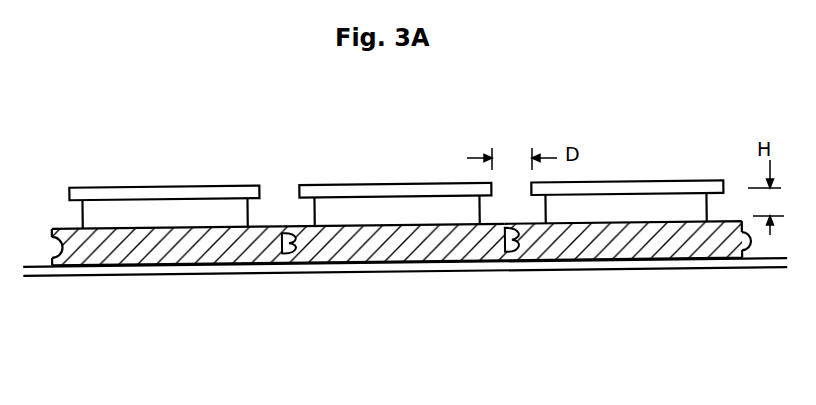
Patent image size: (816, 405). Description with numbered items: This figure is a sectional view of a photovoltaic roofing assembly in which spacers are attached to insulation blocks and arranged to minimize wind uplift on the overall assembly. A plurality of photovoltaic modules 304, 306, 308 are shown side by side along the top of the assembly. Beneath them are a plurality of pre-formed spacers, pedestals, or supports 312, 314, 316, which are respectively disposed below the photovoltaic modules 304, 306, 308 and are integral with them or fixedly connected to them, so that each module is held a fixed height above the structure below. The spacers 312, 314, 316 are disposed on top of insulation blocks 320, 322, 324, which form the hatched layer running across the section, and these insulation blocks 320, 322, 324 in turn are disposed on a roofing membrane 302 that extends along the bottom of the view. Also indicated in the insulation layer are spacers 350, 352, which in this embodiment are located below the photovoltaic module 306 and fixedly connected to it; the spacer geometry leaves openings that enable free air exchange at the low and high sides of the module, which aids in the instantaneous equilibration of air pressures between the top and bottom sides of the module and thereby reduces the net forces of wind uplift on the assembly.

The roofing membrane 302 is at (377, 268).
The photovoltaic module 304 is at (182, 187).
The photovoltaic module 306 is at (390, 185).
The photovoltaic module 308 is at (637, 180).
The spacer 312 is at (213, 212).
The spacer 314 is at (453, 210).
The spacer 316 is at (677, 207).
The insulation block 320 is at (93, 257).
The insulation block 322 is at (333, 252).
The insulation block 324 is at (558, 252).
The spacer 350 is at (297, 227).
The spacer 352 is at (505, 226).